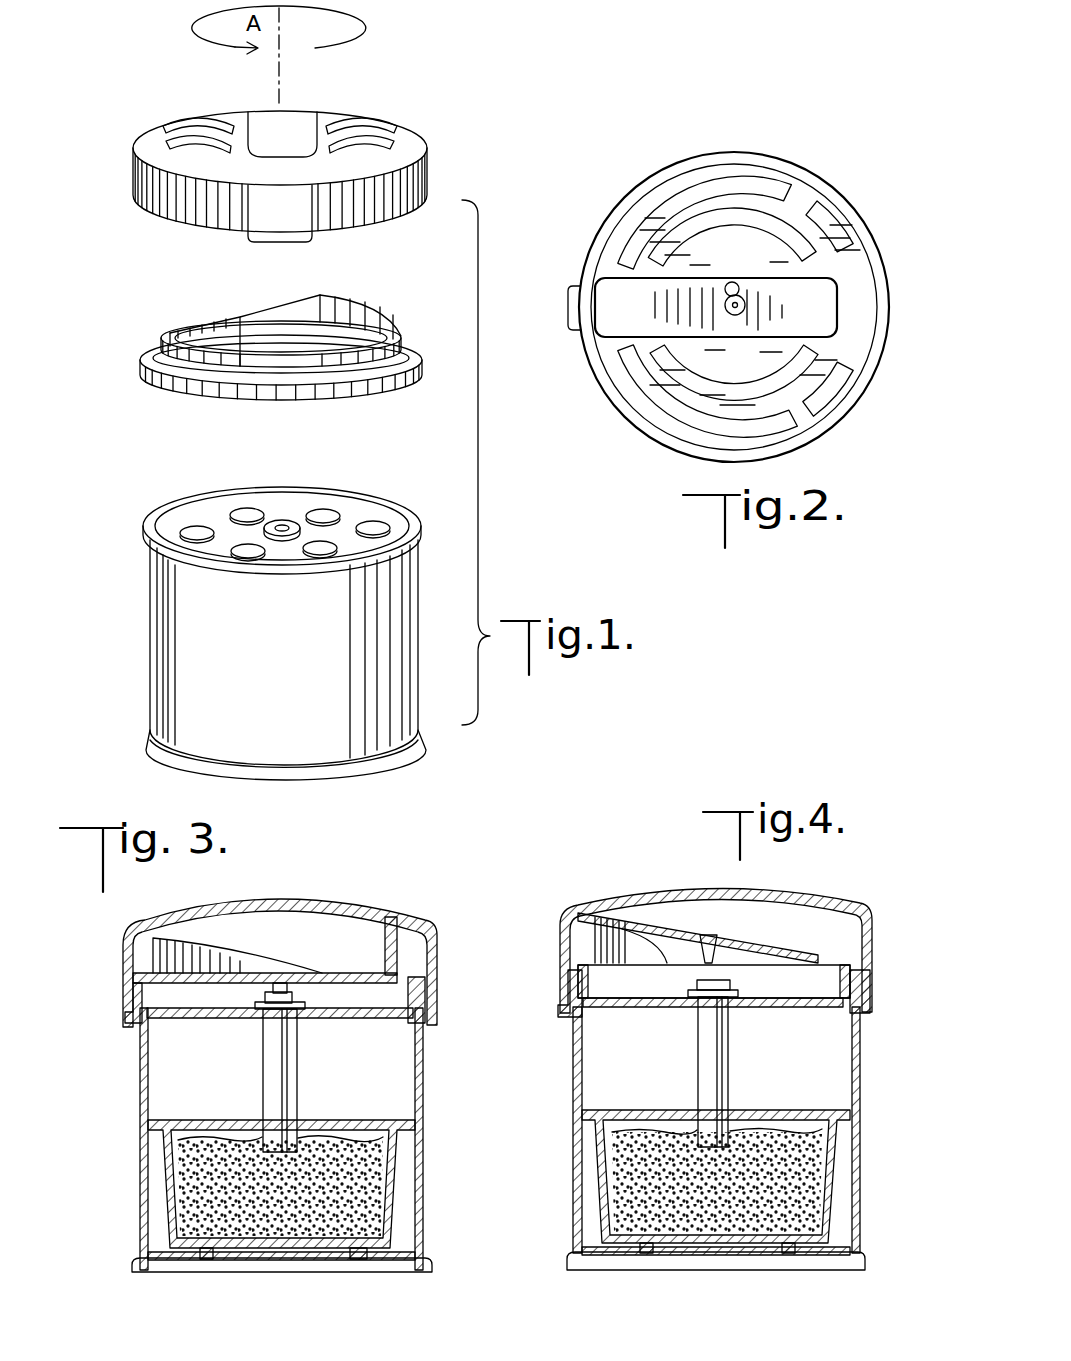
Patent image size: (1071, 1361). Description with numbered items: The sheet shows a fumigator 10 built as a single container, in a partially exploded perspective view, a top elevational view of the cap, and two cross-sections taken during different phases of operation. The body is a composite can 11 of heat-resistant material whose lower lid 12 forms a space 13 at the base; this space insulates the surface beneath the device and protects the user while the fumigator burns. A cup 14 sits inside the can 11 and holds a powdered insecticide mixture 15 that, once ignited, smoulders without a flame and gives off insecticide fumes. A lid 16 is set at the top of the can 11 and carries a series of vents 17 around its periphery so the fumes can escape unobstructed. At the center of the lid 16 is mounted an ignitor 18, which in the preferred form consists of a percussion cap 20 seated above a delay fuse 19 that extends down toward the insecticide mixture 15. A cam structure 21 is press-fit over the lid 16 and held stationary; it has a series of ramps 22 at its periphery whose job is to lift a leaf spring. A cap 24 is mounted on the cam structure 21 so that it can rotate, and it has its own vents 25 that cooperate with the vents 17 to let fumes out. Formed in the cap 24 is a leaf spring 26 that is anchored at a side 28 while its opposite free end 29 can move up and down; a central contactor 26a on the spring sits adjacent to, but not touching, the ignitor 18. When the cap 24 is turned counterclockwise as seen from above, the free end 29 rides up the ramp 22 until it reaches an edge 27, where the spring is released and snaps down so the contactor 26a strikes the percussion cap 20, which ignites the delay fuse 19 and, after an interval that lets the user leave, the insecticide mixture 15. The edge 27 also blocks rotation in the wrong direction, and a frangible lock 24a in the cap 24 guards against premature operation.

In FIG. 1, the fumigator 10 is at (100, 427).
In FIG. 1, the composite can 11 is at (150, 637).
In FIG. 3, the composite can 11 is at (140, 1085).
In FIG. 1, the lower lid 12 is at (151, 733).
In FIG. 3, the lower lid 12 is at (136, 1272).
In FIG. 3, the space 13 is at (197, 1273).
In FIG. 3, the cup 14 is at (170, 1175).
In FIG. 3, the powdered insecticide mixture 15 is at (192, 1208).
In FIG. 4, the powdered insecticide mixture 15 is at (803, 1178).
In FIG. 1, the lid 16 is at (146, 545).
In FIG. 1, the vents 17 is at (238, 512).
In FIG. 3, the vents 17 is at (186, 1020).
In FIG. 1, the ignitor 18 is at (286, 526).
In FIG. 3, the ignitor 18 is at (386, 1038).
In FIG. 4, the ignitor 18 is at (815, 999).
In FIG. 3, the delay fuse 19 is at (294, 1092).
In FIG. 4, the delay fuse 19 is at (740, 1059).
In FIG. 3, the percussion cap 20 is at (345, 1018).
In FIG. 4, the percussion cap 20 is at (745, 994).
In FIG. 1, the cam structure 21 is at (406, 381).
In FIG. 3, the cam structure 21 is at (124, 1008).
In FIG. 4, the cam structure 21 is at (691, 965).
In FIG. 1, the ramps 22 is at (321, 297).
In FIG. 3, the ramps 22 is at (218, 956).
In FIG. 4, the ramps 22 is at (594, 937).
In FIG. 1, the cap 24 is at (426, 163).
In FIG. 2, the cap 24 is at (818, 175).
In FIG. 3, the cap 24 is at (423, 918).
In FIG. 4, the cap 24 is at (846, 904).
In FIG. 1, the frangible lock 24a is at (258, 226).
In FIG. 2, the frangible lock 24a is at (573, 326).
In FIG. 1, the vents 25 is at (400, 128).
In FIG. 2, the vents 25 is at (808, 408).
In FIG. 2, the leaf spring 26 is at (836, 280).
In FIG. 3, the leaf spring 26 is at (334, 972).
In FIG. 4, the leaf spring 26 is at (763, 944).
In FIG. 2, the central contactor 26a is at (734, 292).
In FIG. 3, the central contactor 26a is at (281, 989).
In FIG. 4, the central contactor 26a is at (694, 936).
In FIG. 1, the edge 27 is at (241, 348).
In FIG. 4, the edge 27 is at (592, 953).
In FIG. 2, the side 28 is at (836, 326).
In FIG. 3, the side 28 is at (426, 991).
In FIG. 2, the free end 29 is at (612, 288).
In FIG. 4, the free end 29 is at (587, 917).